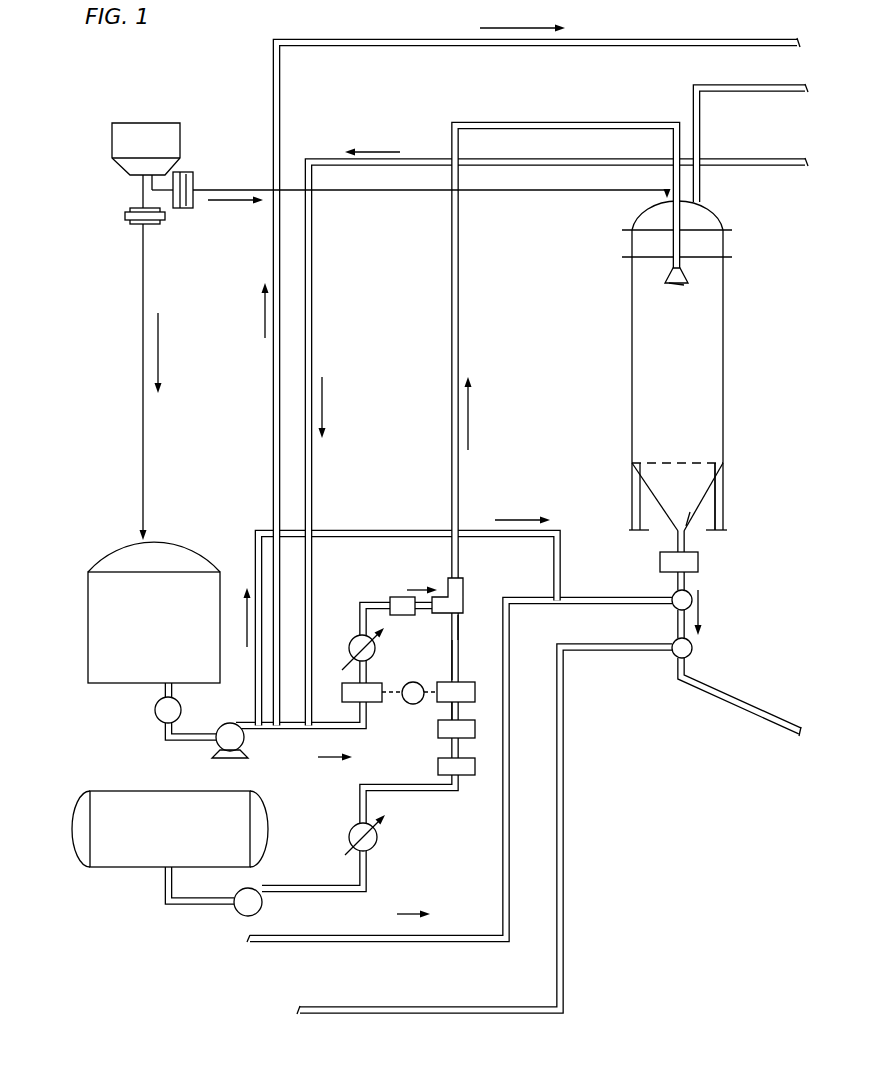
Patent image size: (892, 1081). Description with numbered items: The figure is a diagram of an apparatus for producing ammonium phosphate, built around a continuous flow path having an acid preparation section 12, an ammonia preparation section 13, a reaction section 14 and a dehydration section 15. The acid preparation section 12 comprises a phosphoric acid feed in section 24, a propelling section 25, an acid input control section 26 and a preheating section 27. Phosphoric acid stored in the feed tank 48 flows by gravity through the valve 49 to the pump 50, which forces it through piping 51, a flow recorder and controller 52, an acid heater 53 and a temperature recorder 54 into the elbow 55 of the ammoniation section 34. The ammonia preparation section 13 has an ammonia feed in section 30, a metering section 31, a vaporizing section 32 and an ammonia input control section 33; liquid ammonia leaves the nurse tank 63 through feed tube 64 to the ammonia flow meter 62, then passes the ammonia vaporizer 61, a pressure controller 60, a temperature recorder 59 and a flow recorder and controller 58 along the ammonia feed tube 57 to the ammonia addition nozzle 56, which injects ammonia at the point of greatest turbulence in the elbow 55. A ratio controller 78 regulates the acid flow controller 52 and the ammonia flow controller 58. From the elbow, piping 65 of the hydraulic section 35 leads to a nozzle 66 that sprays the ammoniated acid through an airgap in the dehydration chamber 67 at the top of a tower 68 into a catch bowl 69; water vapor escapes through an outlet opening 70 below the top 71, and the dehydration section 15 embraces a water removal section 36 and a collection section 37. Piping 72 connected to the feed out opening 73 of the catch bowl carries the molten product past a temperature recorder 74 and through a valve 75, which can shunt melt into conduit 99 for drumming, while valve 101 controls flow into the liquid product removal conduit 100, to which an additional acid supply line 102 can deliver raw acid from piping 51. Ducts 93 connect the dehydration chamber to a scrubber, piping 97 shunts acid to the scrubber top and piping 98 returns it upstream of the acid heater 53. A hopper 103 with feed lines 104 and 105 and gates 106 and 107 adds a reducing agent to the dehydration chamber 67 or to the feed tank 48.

The acid preparation section 12 is at (338, 756).
The ammonia preparation section 13 is at (418, 917).
The reaction section 14 is at (432, 589).
The dehydration section 15 is at (615, 374).
The phosphoric acid feed in section 24 is at (140, 741).
The propelling section 25 is at (243, 786).
The phosphoric acid input control section 26 is at (407, 727).
The preheating section 27 is at (377, 652).
The ammonia feed in section 30 is at (155, 949).
The metering section 31 is at (300, 924).
The vaporizing section 32 is at (343, 824).
The ammonia input control section 33 is at (503, 729).
The ammoniation section 34 is at (503, 594).
The hydraulic section 35 is at (503, 474).
The water removal section 36 is at (762, 289).
The collection section 37 is at (749, 485).
The feed tank 48 is at (100, 605).
The valve 49 is at (165, 710).
The pump 50 is at (233, 732).
The piping 51 is at (293, 728).
The flow recorder and controller 52 is at (366, 702).
The acid heater 53 is at (352, 640).
The temperature recorder 54 is at (402, 598).
The elbow 55 is at (463, 580).
The ammonia addition nozzle 56 is at (462, 601).
The ammonia feed tube 57 is at (458, 653).
The flow recorder and controller 58 is at (462, 691).
The temperature recorder 59 is at (462, 731).
The pressure controller 60 is at (463, 769).
The ammonia vaporizer 61 is at (377, 839).
The ammonia flow meter 62 is at (254, 893).
The nurse tank 63 is at (85, 820).
The feed tube 64 is at (165, 889).
The piping 65 is at (452, 324).
The nozzle 66 is at (674, 290).
The dehydration chamber 67 is at (720, 264).
The tower 68 is at (719, 483).
The catch bowl 69 is at (678, 491).
The outlet opening 70 is at (640, 243).
The top 71 is at (705, 216).
The piping 72 is at (687, 549).
The feed out opening 73 is at (690, 513).
The temperature recorder 74 is at (700, 563).
The valve 75 is at (698, 643).
The ratio controller 78 is at (414, 681).
The ducts 93 is at (773, 86).
The piping 97 is at (712, 40).
The piping 98 is at (424, 167).
The conduit 99 is at (453, 1013).
The liquid product removal conduit 100 is at (548, 605).
The valve 101 is at (673, 594).
The additional acid supply line 102 is at (485, 530).
The hopper 103 is at (155, 140).
The feed line 104 is at (240, 180).
The feed line 105 is at (141, 258).
The gate 106 is at (191, 171).
The gate 107 is at (125, 216).